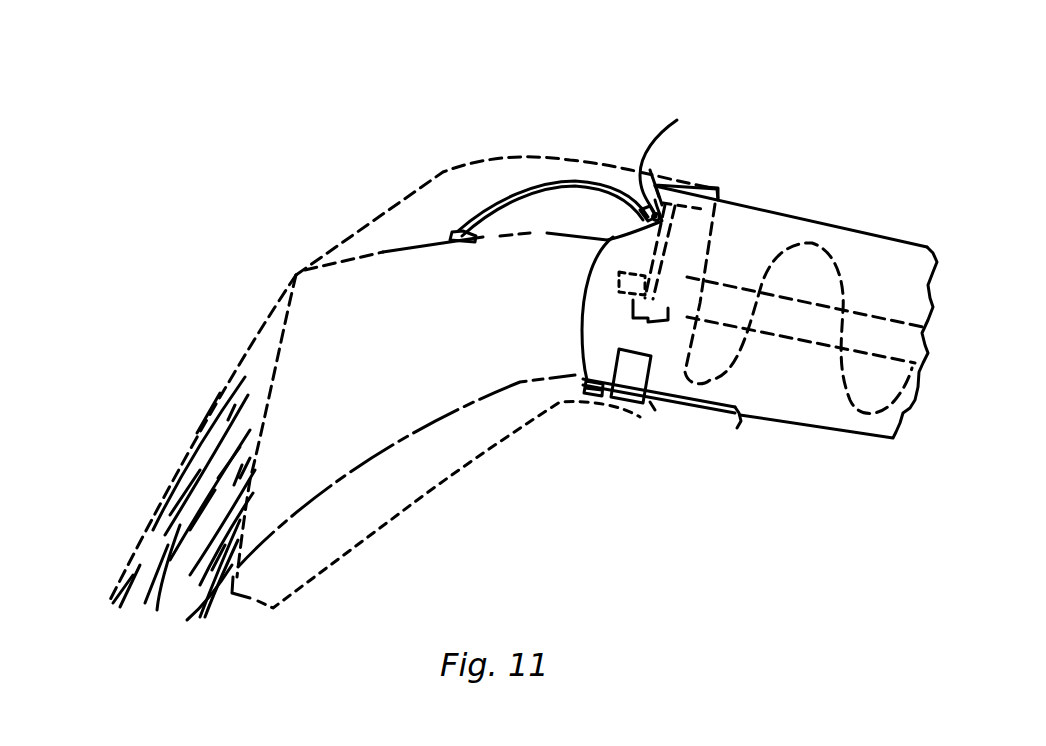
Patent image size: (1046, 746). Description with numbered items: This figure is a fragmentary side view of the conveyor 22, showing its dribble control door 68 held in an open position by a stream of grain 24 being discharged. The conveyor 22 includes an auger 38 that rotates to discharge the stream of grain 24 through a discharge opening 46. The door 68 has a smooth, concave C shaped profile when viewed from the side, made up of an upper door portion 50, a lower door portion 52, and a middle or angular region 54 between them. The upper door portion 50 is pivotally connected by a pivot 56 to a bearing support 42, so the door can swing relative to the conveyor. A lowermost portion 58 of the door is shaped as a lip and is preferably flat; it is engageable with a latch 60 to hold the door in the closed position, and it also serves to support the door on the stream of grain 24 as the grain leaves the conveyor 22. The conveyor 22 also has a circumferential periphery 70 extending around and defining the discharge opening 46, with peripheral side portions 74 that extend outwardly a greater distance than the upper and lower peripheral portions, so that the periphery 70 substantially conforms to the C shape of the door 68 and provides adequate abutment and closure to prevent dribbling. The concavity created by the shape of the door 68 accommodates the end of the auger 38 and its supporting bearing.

The conveyor 22 is at (895, 238).
The stream of grain 24 is at (180, 458).
The auger 38 is at (811, 242).
The bearing support 42 is at (665, 243).
The discharge opening 46 is at (600, 350).
The upper door portion 50 is at (623, 190).
The lower door portion 52 is at (503, 210).
The middle or angular region 54 is at (590, 177).
The pivot 56 is at (679, 166).
The lowermost portion 58 is at (462, 233).
The latch 60 is at (590, 400).
The dribble control door 68 is at (558, 172).
The circumferential periphery 70 is at (580, 300).
The peripheral side portions 74 is at (600, 320).